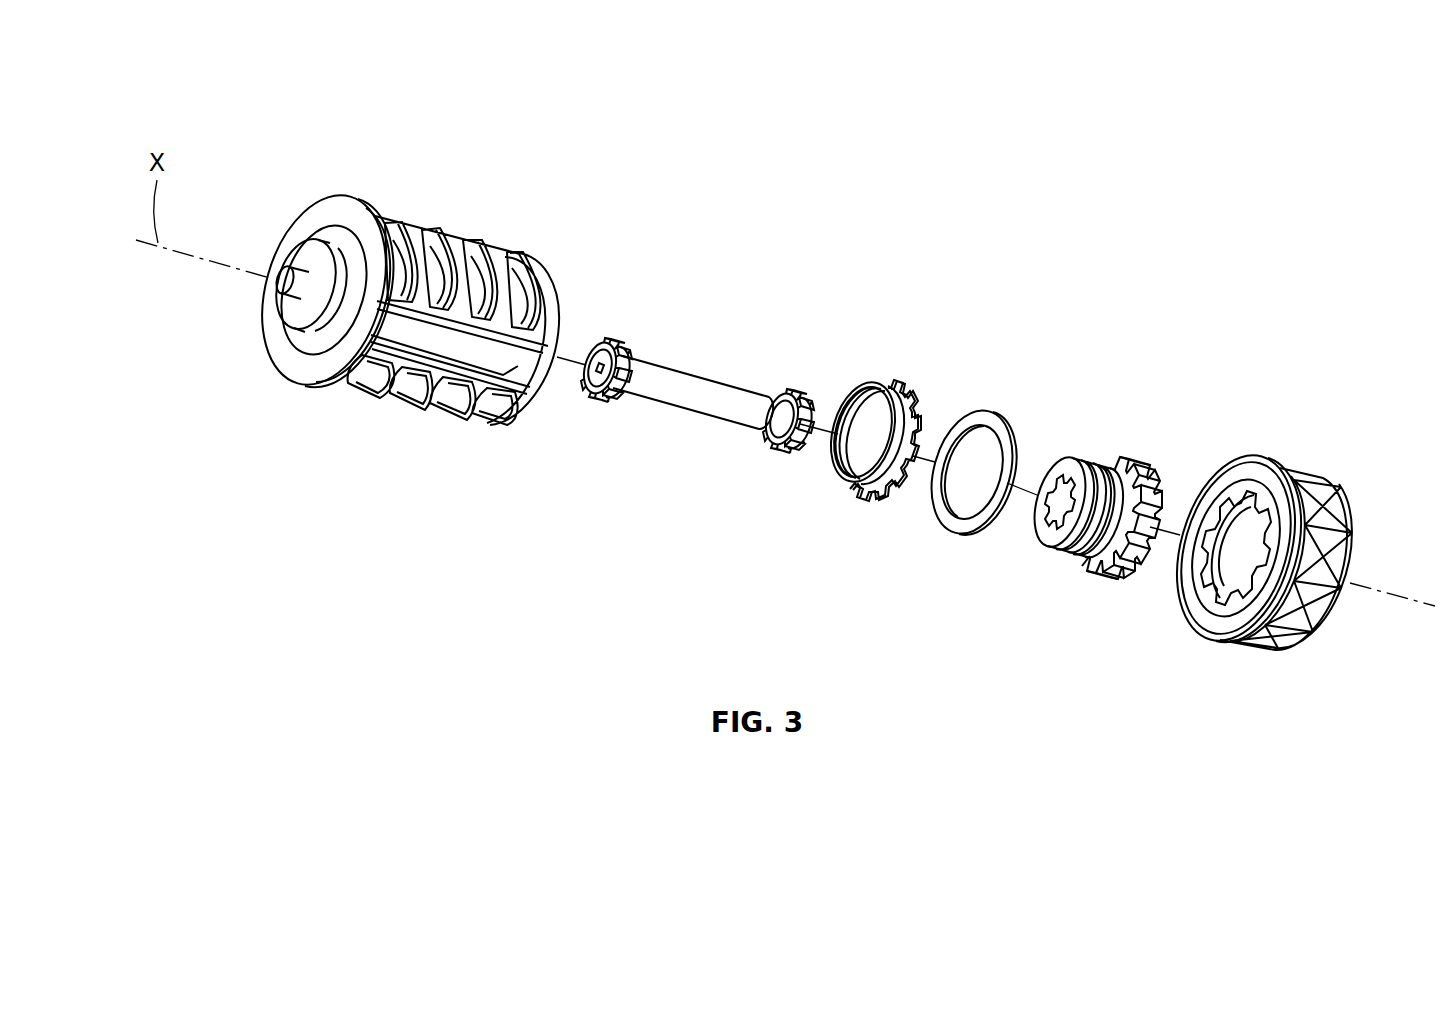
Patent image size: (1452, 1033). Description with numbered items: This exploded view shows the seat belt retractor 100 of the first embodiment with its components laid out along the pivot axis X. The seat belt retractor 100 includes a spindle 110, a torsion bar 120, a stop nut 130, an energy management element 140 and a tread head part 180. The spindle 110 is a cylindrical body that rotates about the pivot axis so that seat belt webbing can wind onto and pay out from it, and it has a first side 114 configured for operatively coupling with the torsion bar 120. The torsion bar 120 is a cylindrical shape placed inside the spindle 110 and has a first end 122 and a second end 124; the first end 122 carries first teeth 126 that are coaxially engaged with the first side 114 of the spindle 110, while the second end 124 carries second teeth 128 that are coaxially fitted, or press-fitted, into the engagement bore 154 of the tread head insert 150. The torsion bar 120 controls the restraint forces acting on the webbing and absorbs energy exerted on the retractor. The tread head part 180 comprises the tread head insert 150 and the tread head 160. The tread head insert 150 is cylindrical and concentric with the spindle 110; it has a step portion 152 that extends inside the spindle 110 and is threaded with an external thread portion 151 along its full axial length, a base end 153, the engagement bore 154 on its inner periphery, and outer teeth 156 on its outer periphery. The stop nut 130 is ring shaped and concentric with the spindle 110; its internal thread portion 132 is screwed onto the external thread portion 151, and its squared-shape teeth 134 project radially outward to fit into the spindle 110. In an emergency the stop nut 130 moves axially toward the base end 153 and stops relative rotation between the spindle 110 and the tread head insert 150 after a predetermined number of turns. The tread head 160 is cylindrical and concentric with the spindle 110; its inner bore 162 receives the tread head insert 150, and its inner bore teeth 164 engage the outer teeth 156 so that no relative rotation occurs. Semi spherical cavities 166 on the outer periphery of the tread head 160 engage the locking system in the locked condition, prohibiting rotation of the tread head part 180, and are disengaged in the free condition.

The seat belt retractor 100 is at (865, 124).
The spindle 110 is at (400, 270).
The first side 114 is at (322, 223).
The torsion bar 120 is at (694, 380).
The first end 122 is at (589, 398).
The second end 124 is at (756, 447).
The first teeth 126 is at (605, 340).
The second teeth 128 is at (781, 385).
The stop nut 130 is at (893, 414).
The internal thread portion 132 is at (836, 463).
The squared-shape teeth 134 is at (900, 473).
The energy management element 140 is at (1000, 397).
The tread head insert 150 is at (1092, 500).
The external thread portion 151 is at (1083, 552).
The step portion 152 is at (1107, 572).
The base end 153 is at (1093, 455).
The engagement bore 154 is at (1037, 508).
The outer teeth 156 is at (1160, 490).
The tread head 160 is at (1276, 531).
The inner bore 162 is at (1217, 602).
The inner bore teeth 164 is at (1260, 498).
The semi spherical cavities 166 is at (1298, 618).
The tread head part 180 is at (1151, 300).